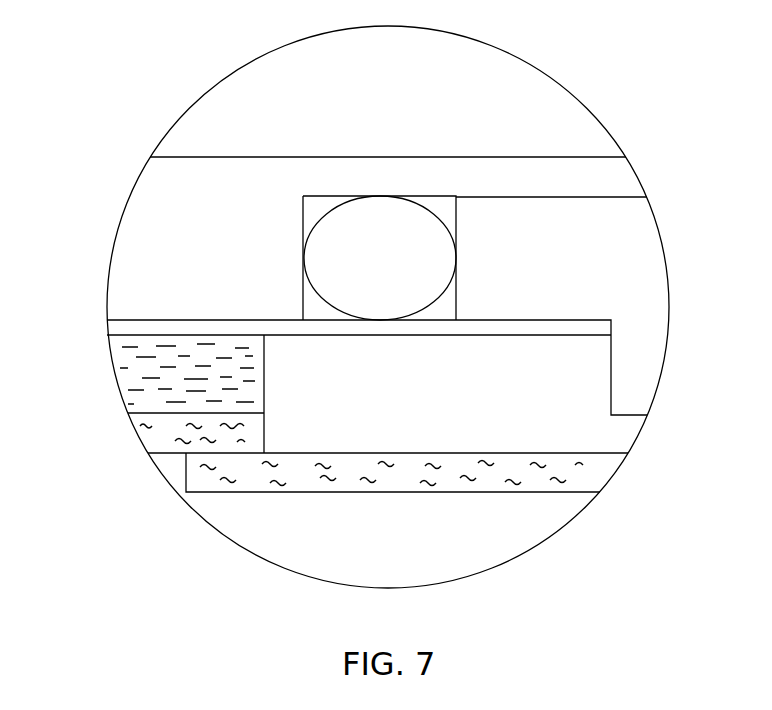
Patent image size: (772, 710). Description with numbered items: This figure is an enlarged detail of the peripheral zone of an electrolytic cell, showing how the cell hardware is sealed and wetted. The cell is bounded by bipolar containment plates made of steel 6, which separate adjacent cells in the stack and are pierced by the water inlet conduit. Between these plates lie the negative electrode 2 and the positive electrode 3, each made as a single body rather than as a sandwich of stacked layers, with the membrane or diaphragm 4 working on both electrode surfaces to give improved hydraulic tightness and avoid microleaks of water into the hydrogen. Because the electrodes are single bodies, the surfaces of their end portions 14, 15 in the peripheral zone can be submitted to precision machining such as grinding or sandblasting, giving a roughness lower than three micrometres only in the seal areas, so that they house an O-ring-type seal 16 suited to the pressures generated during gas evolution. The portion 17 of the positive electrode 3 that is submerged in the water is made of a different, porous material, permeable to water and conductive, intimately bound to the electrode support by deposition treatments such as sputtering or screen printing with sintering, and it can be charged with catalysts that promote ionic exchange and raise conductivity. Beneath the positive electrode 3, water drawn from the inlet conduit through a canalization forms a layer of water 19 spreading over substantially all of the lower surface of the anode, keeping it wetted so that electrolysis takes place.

The negative electrode 2 is at (152, 228).
The positive electrode 3 is at (563, 412).
The membrane or diaphragm 4 is at (138, 328).
The bipolar containment plate 6 is at (522, 90).
The end portion of electrode 14 is at (302, 300).
The end portion of electrode 15 is at (325, 196).
The O-ring-type seal 16 is at (340, 245).
The portion of the positive electrode submerged in the water 17 is at (145, 372).
The layer of water 19 is at (172, 427).